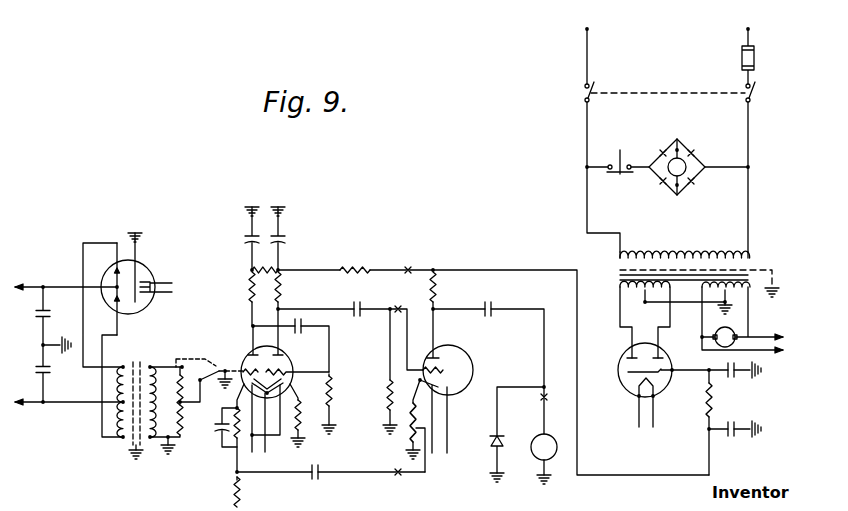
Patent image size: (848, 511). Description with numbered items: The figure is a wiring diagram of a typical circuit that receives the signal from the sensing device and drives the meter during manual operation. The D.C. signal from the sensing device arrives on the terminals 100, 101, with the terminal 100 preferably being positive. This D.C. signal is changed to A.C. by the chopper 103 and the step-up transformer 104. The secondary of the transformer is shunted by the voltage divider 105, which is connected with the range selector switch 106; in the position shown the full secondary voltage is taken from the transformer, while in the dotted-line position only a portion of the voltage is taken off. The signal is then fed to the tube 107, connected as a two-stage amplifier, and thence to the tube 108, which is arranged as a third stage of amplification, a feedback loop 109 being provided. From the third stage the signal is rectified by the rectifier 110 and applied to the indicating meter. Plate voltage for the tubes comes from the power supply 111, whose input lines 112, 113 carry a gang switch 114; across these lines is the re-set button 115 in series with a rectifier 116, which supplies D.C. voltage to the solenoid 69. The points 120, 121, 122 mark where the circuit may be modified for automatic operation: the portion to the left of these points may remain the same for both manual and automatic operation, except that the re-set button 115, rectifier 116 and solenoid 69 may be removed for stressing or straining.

The terminal 100 is at (18, 282).
The terminal 101 is at (22, 410).
The chopper 103 is at (147, 265).
The step-up transformer 104 is at (136, 363).
The voltage divider 105 is at (184, 440).
The range selector switch 106 is at (206, 362).
The tube 107 is at (288, 363).
The tube 108 is at (470, 366).
The feedback loop 109 is at (428, 457).
The rectifier 110 is at (542, 399).
The power supply 111 is at (686, 378).
The input line 112 is at (585, 210).
The input line 113 is at (750, 210).
The gang switch 114 is at (745, 100).
The re-set button 115 is at (614, 177).
The rectifier 116 is at (700, 160).
The solenoid 69 is at (675, 177).
The point 120 is at (410, 267).
The point 121 is at (398, 306).
The point 122 is at (397, 476).